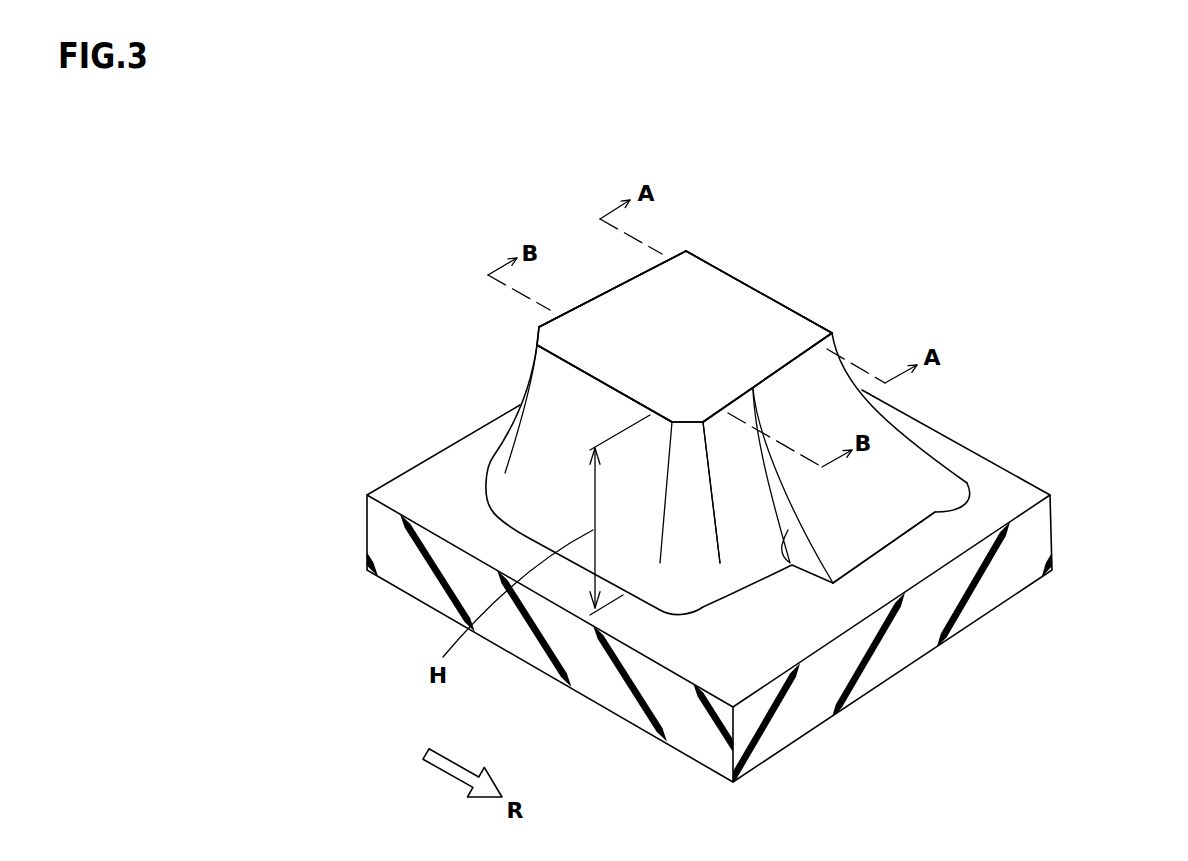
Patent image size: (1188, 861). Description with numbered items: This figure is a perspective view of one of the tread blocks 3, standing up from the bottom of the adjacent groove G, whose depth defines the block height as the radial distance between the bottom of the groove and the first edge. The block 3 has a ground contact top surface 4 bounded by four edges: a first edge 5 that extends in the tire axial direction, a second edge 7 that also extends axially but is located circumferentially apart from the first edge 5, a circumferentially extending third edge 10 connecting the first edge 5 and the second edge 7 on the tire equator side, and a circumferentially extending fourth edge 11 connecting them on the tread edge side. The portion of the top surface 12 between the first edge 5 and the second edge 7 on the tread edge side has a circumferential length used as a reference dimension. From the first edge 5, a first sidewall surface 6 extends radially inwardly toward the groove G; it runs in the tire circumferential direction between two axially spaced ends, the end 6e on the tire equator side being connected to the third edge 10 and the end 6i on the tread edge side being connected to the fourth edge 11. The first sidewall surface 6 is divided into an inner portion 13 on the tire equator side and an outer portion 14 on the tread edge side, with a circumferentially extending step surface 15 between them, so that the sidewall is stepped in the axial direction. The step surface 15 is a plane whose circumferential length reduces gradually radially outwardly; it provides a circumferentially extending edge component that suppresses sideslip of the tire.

The block 3 is at (892, 207).
The ground contact top surface 4 is at (690, 287).
The first edge 5 is at (860, 392).
The first sidewall surface 6 is at (854, 816).
The end on the tire equator side 6e is at (903, 433).
The end on the tread edge side 6i is at (710, 500).
The second edge 7 is at (597, 293).
The third edge 10 is at (727, 270).
The fourth edge 11 is at (553, 353).
The top surface 12 is at (778, 337).
The inner portion 13 is at (870, 513).
The outer portion 14 is at (743, 537).
The step surface 15 is at (790, 565).
The groove G is at (998, 498).